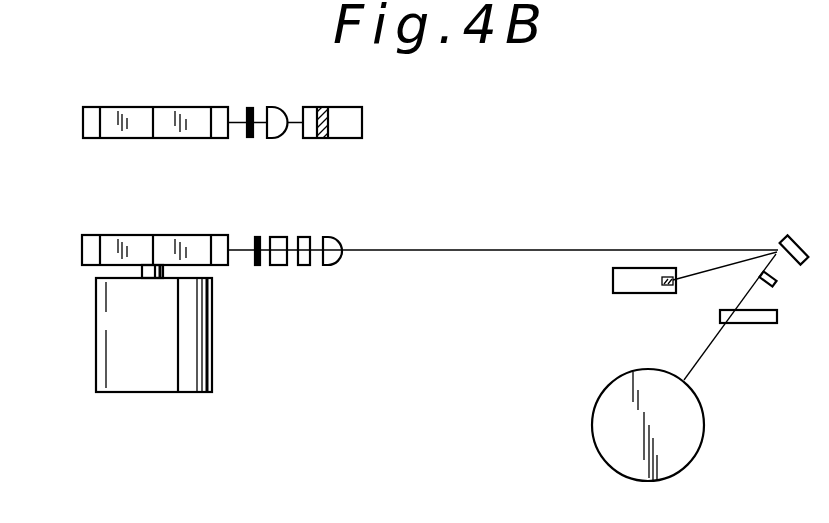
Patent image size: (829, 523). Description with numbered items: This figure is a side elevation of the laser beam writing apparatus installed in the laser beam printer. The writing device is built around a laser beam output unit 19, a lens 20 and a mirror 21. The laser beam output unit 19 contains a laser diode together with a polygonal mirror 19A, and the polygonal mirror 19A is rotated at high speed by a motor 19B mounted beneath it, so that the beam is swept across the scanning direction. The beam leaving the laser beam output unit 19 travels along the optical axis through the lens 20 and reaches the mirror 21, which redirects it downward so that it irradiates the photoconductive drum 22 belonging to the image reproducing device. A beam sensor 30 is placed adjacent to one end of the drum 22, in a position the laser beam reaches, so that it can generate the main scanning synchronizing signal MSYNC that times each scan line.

The laser beam output unit 19 is at (77, 106).
The polygonal mirror 19A is at (162, 115).
The motor 19B is at (210, 377).
The lens 20 is at (280, 116).
The mirror 21 is at (790, 235).
The photoconductive drum 22 is at (685, 428).
The beam sensor 30 is at (642, 295).